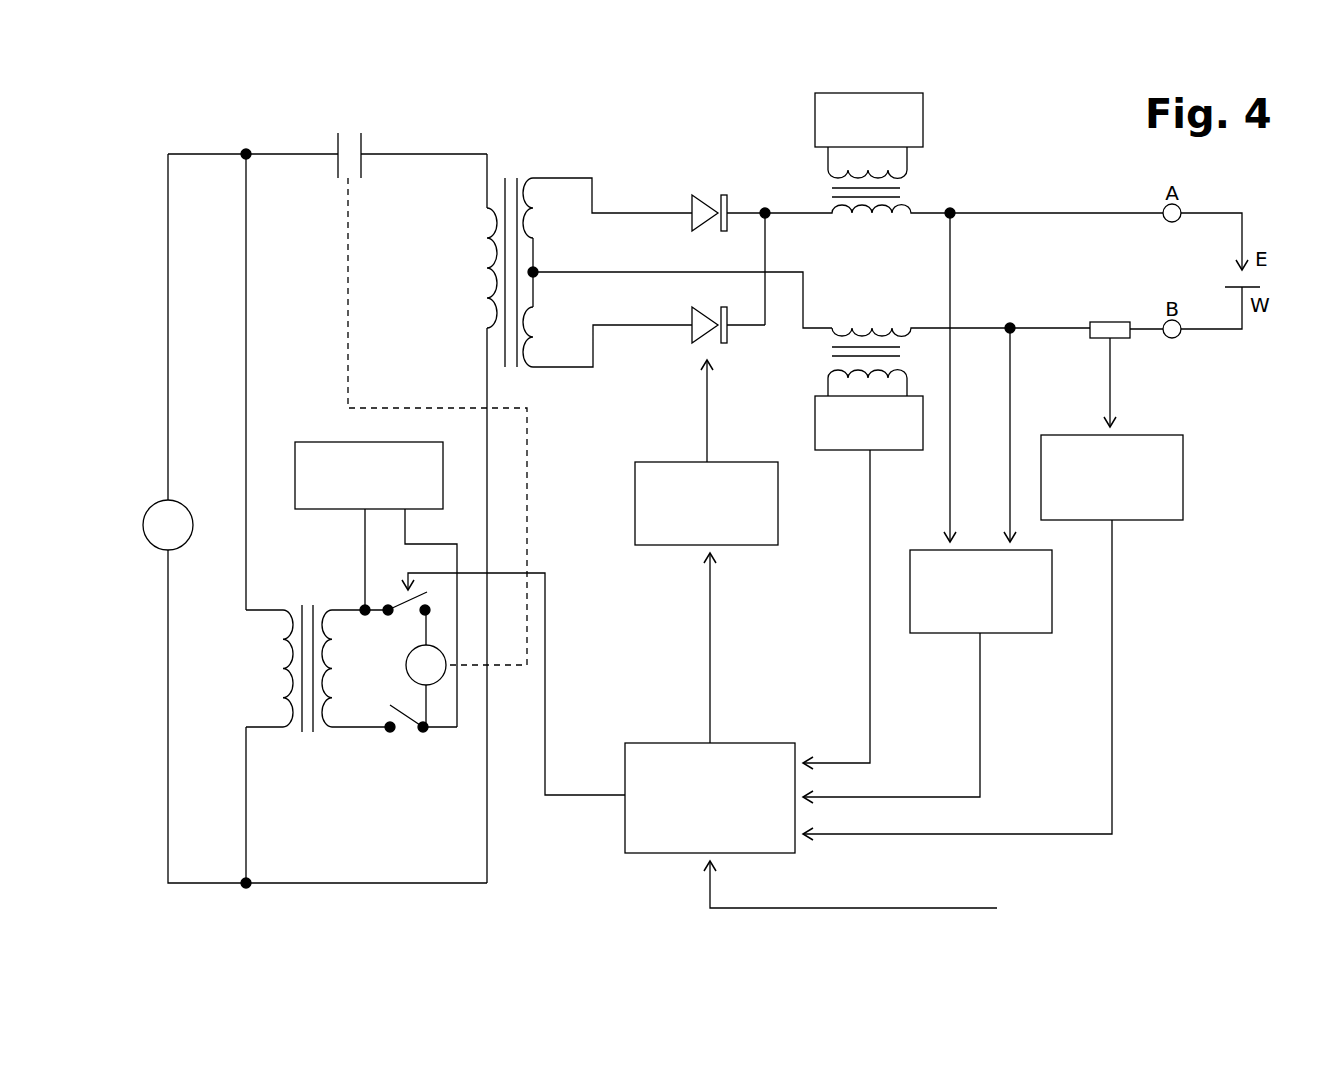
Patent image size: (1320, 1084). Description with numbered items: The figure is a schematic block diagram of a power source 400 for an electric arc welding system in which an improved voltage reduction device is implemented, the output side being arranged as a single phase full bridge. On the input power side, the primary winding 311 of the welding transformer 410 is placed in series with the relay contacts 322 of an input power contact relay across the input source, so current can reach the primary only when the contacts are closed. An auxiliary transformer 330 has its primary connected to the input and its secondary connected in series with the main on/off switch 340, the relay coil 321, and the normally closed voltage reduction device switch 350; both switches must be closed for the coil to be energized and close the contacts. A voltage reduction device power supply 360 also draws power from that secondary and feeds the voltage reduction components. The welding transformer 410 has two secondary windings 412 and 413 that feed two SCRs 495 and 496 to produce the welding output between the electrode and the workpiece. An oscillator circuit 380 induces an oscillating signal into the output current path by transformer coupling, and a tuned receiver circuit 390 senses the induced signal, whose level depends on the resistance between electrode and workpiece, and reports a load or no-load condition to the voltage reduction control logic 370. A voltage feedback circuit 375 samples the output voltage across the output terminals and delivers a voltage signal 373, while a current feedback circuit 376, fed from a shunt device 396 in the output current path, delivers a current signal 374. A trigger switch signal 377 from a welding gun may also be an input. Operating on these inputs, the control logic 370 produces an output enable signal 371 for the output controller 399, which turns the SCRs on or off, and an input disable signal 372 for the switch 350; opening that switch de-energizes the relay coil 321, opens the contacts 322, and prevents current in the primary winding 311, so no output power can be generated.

The power source 400 is at (206, 126).
The relay contacts 322 is at (362, 143).
The welding transformer 410 is at (517, 160).
The primary winding 311 is at (487, 222).
The secondary winding 412 is at (540, 212).
The secondary winding 413 is at (532, 330).
The SCR 495 is at (698, 203).
The SCR 496 is at (698, 336).
The oscillator circuit 380 is at (923, 130).
The tuned receiver circuit 390 is at (818, 397).
The shunt device 396 is at (1090, 322).
The current feedback circuit 376 is at (1150, 435).
The voltage feedback circuit 375 is at (910, 567).
The output controller 399 is at (655, 462).
The VRD control logic 370 is at (668, 745).
The output enable signal 371 is at (707, 602).
The input disable signal 372 is at (545, 603).
The voltage signal 373 is at (980, 668).
The current signal 374 is at (1112, 640).
The trigger switch signal 377 is at (797, 908).
The VRD power supply 360 is at (330, 442).
The auxiliary transformer 330 is at (313, 596).
The VRD switch 350 is at (400, 602).
The relay coil 321 is at (406, 665).
The ON/OFF switch 340 is at (400, 707).